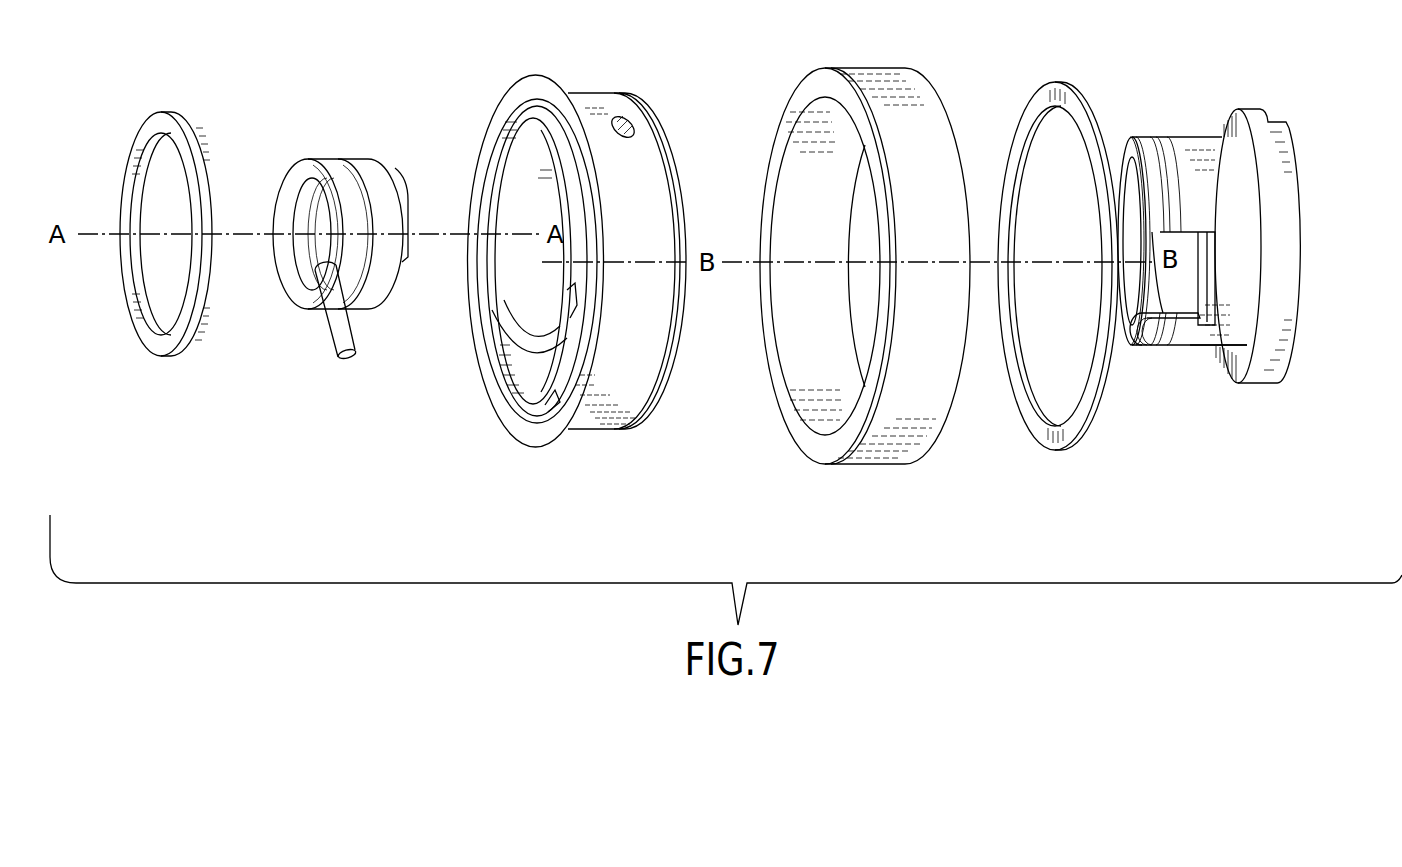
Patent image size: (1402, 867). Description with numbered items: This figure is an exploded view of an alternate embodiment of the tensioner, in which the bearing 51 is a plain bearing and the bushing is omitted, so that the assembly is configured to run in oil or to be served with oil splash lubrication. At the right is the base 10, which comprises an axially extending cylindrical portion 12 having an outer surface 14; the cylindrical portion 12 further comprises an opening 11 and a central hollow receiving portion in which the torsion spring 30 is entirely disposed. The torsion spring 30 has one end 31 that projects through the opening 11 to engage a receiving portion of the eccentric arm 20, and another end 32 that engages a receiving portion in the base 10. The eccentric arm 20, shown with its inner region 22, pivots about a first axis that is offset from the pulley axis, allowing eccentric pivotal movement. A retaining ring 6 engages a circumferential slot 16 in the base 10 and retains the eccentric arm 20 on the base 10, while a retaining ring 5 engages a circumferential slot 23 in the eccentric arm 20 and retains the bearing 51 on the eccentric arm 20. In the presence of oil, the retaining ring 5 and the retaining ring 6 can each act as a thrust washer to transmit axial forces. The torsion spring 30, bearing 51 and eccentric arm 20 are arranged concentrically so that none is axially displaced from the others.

The retaining ring 6 is at (161, 112).
The torsion spring 30 is at (350, 239).
The end 31 is at (333, 337).
The end 32 is at (408, 203).
The eccentric arm 20 is at (558, 252).
The inner recess 22 is at (525, 286).
The circumferential slot 23 is at (645, 419).
The bearing 51 is at (862, 68).
The retaining ring 5 is at (1058, 82).
The base 10 is at (1251, 272).
The outer surface 14 is at (1243, 207).
The opening 11 is at (1183, 280).
The cylindrical portion 12 is at (1190, 345).
The circumferential slot 16 is at (1158, 345).